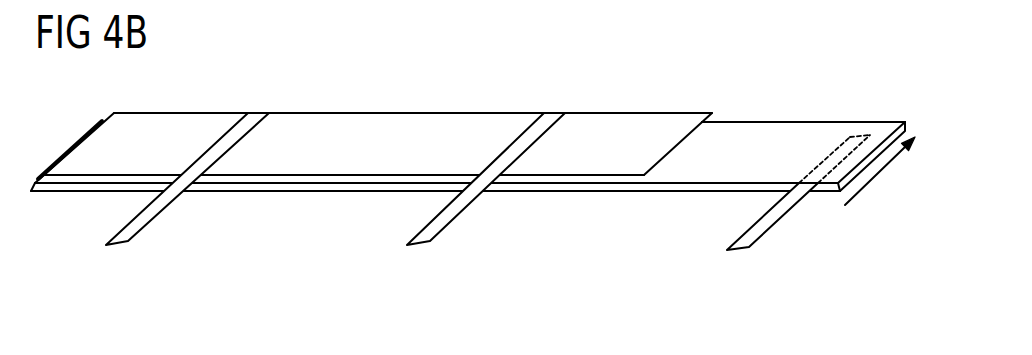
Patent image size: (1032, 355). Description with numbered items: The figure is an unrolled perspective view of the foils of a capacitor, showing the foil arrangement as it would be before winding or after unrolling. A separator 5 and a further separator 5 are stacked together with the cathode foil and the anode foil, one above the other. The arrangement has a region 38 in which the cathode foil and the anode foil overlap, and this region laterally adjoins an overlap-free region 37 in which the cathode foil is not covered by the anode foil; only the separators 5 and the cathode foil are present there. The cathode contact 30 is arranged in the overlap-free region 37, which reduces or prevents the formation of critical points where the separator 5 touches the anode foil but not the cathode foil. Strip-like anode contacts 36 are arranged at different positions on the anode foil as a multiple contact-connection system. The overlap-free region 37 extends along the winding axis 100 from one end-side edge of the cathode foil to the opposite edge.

The separator 5 is at (299, 185).
The region 38 is at (711, 104).
The overlap-free region 37 is at (903, 103).
The anode contacts 36 is at (133, 226).
The cathode contact 30 is at (763, 226).
The winding axis 100 is at (875, 176).